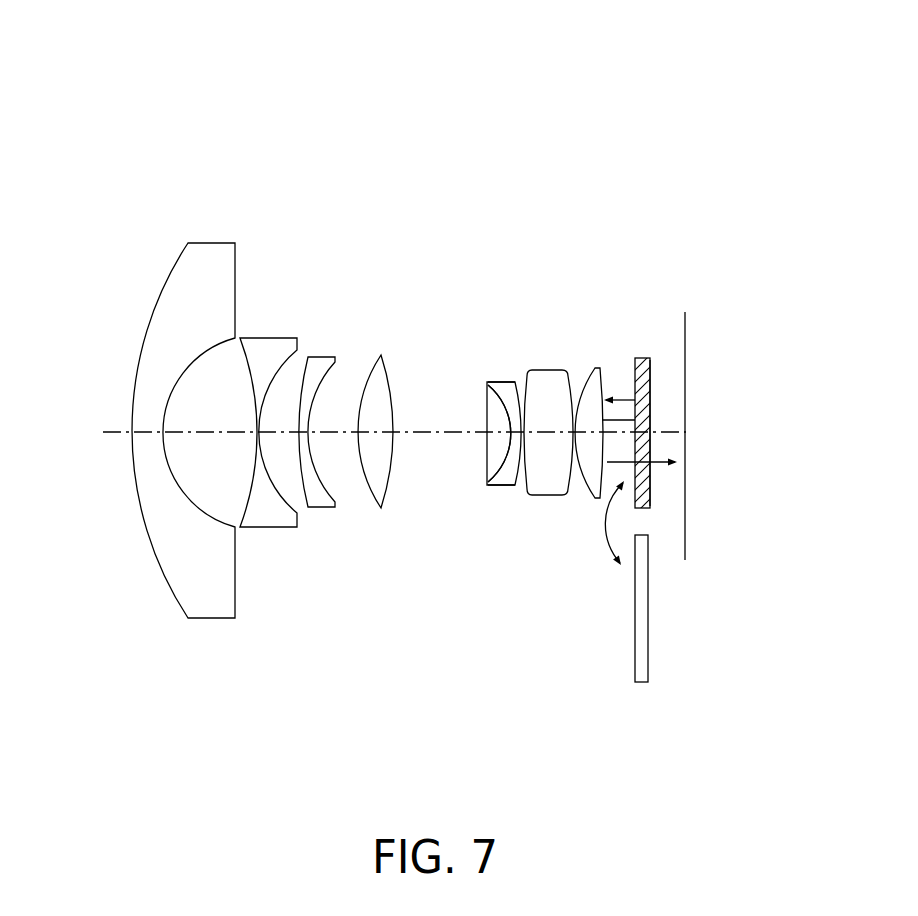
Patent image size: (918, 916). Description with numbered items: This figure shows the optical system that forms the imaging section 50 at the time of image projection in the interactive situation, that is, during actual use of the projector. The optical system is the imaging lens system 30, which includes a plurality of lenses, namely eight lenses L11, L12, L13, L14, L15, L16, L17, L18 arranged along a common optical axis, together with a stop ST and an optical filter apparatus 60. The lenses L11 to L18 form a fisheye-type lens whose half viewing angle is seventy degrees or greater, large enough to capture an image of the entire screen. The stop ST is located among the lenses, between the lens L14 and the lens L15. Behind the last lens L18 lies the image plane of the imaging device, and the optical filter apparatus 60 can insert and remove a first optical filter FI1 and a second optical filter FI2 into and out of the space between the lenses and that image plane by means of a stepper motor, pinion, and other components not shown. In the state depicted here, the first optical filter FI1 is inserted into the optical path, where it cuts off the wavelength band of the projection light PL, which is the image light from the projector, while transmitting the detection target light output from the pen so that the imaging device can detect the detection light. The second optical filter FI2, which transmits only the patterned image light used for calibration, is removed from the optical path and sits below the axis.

The imaging section 50 is at (517, 107).
The imaging lens system 30 is at (444, 261).
The lens L11 is at (202, 246).
The lens L12 is at (262, 347).
The lens L13 is at (330, 361).
The lens L14 is at (382, 357).
The stop ST is at (470, 402).
The lens L15 is at (487, 460).
The lens L16 is at (500, 486).
The lens L17 is at (547, 375).
The lens L18 is at (597, 366).
The projection light PL is at (622, 396).
The first optical filter FI1 is at (653, 364).
The second optical filter FI2 is at (635, 650).
The optical filter apparatus 60 is at (632, 689).